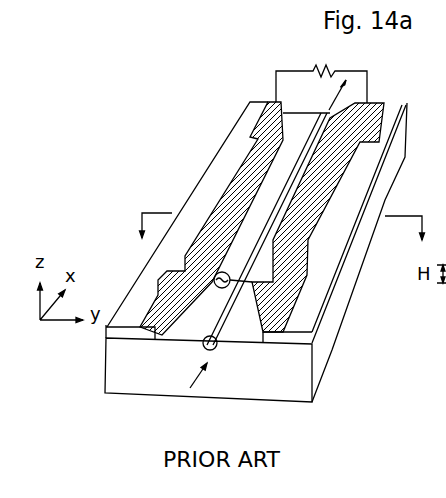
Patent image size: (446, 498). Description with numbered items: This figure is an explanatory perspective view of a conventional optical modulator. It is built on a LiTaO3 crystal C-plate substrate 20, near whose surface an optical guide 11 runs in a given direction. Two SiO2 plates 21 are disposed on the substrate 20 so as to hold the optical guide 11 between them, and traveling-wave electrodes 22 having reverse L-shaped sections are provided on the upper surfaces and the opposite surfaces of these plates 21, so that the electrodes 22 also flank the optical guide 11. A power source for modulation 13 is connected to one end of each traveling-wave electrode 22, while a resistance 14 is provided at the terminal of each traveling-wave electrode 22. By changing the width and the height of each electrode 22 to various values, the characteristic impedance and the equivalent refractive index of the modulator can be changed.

The optical waveguide 11 is at (214, 351).
The power source for modulation 13 is at (217, 271).
The resistance 14 is at (333, 69).
The substrate 20 is at (320, 363).
The SiO2 plates 21 is at (223, 152).
The traveling-wave electrodes 22 is at (258, 123).